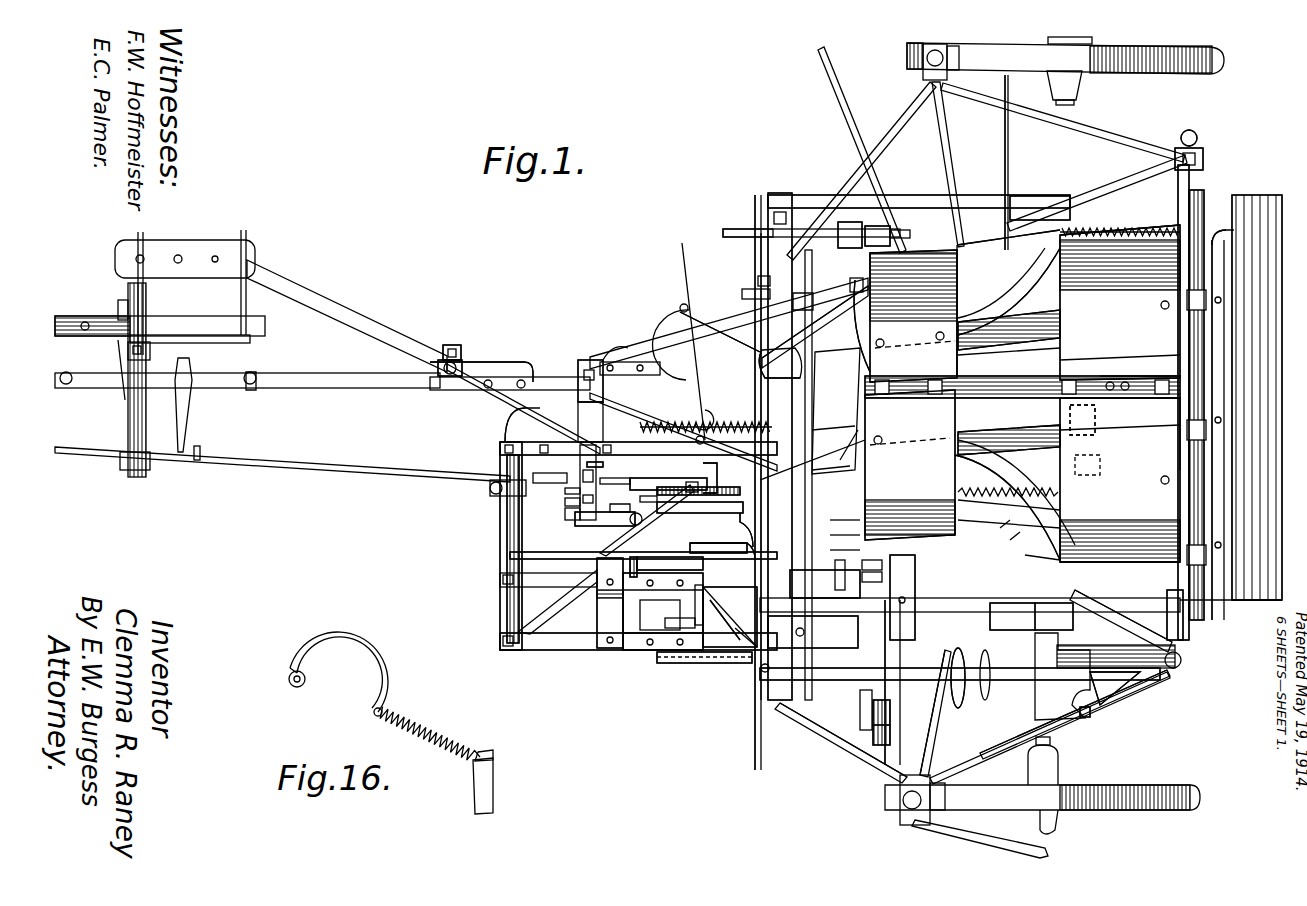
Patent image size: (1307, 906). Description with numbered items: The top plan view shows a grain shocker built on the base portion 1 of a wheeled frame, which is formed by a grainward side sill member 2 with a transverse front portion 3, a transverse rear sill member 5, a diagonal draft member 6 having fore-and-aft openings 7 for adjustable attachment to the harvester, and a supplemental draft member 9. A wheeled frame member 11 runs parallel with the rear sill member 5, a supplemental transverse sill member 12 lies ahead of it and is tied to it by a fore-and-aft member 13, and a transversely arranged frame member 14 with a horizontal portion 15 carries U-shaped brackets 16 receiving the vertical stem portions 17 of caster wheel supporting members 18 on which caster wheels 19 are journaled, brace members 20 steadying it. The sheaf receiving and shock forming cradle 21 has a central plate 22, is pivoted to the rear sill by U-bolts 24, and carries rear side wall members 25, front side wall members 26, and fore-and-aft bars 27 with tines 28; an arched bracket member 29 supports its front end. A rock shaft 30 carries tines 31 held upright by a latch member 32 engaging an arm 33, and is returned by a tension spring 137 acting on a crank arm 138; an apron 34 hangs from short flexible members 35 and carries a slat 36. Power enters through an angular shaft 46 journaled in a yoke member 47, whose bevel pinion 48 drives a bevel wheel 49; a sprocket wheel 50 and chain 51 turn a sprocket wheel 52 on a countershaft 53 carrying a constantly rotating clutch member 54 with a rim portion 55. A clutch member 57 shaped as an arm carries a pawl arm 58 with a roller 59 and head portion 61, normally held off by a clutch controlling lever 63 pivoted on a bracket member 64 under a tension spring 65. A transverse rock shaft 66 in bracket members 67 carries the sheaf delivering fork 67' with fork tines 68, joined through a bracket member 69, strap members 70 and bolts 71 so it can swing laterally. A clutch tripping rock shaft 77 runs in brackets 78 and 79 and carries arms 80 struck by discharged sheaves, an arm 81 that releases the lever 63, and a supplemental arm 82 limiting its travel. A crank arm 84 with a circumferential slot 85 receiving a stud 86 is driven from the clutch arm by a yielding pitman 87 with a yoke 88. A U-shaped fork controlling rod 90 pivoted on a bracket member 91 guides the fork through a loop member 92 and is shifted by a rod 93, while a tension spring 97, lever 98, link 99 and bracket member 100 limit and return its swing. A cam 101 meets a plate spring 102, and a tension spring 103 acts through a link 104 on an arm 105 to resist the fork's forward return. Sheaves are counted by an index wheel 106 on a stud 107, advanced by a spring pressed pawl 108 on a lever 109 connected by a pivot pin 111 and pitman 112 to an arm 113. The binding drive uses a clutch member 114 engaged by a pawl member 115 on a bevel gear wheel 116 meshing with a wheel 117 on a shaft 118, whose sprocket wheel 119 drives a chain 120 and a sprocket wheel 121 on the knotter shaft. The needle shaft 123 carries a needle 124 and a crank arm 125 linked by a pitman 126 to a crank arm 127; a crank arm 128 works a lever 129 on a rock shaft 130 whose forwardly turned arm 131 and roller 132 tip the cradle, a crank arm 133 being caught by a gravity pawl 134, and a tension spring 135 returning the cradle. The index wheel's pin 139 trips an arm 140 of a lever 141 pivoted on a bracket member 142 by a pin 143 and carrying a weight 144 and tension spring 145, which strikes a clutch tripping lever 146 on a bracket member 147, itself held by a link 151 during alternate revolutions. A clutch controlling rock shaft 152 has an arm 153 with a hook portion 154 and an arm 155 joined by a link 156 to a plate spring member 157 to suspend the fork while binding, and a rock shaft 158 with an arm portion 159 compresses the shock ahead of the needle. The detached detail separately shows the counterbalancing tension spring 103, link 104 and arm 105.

In FIG. 1, the base portion of the wheeled frame 1 is at (500, 542).
In FIG. 1, the side sill member 2 is at (1095, 185).
In FIG. 1, the front portion 3 is at (128, 424).
In FIG. 1, the transverse rear sill member 5 is at (1189, 624).
In FIG. 1, the draft member 6 is at (425, 330).
In FIG. 1, the openings 7 is at (180, 258).
In FIG. 1, the supplemental draft member 9 is at (845, 122).
In FIG. 1, the wheeled frame member 11 is at (1062, 238).
In FIG. 1, the supplemental transverse sill member 12 is at (760, 275).
In FIG. 16, the supplemental transverse sill member 12 is at (496, 798).
In FIG. 1, the fore and aft member 13 is at (1040, 200).
In FIG. 1, the transversely arranged frame member 14 is at (955, 172).
In FIG. 1, the horizontal portion 15 is at (985, 522).
In FIG. 1, the U-shaped brackets 16 is at (923, 68).
In FIG. 1, the vertical stem portions 17 is at (955, 68).
In FIG. 1, the caster wheel supporting members 18 is at (905, 48).
In FIG. 1, the caster wheels 19 is at (1118, 72).
In FIG. 1, the brace members 20 is at (855, 152).
In FIG. 1, the sheaf receiving and shock forming cradle 21 is at (980, 502).
In FIG. 1, the central plate 22 is at (1050, 438).
In FIG. 1, the U-bolts 24 is at (1228, 210).
In FIG. 1, the side wall members 25 is at (1000, 440).
In FIG. 1, the side wall members 26 is at (965, 280).
In FIG. 1, the bars 27 is at (1040, 320).
In FIG. 1, the tines 28 is at (988, 348).
In FIG. 1, the arched bracket member 29 is at (853, 322).
In FIG. 1, the rock shaft 30 is at (1245, 604).
In FIG. 1, the tines 31 is at (1165, 310).
In FIG. 1, the latch member 32 is at (1160, 376).
In FIG. 1, the arm 33 is at (1180, 440).
In FIG. 1, the apron 34 is at (1200, 170).
In FIG. 1, the short flexible members 35 is at (1167, 595).
In FIG. 1, the slat 36 is at (1260, 205).
In FIG. 1, the angular shaft 46 is at (735, 228).
In FIG. 1, the yoke member 47 is at (880, 228).
In FIG. 1, the bevel pinion 48 is at (855, 278).
In FIG. 1, the bevel wheel 49 is at (905, 232).
In FIG. 1, the sprocket wheel 50 is at (918, 682).
In FIG. 1, the chain 51 is at (836, 700).
In FIG. 1, the sprocket wheel 52 is at (670, 663).
In FIG. 1, the countershaft 53 is at (690, 628).
In FIG. 1, the constantly rotating clutch member 54 is at (668, 588).
In FIG. 1, the rim portion 55 is at (740, 595).
In FIG. 1, the clutch member 57 is at (690, 545).
In FIG. 1, the pawl arm 58 is at (696, 595).
In FIG. 1, the roller 59 is at (716, 620).
In FIG. 1, the head portion 61 is at (672, 600).
In FIG. 1, the clutch controlling lever 63 is at (568, 552).
In FIG. 1, the bracket member 64 is at (597, 616).
In FIG. 1, the tension spring 65 is at (635, 557).
In FIG. 1, the transverse rock shaft 66 is at (565, 491).
In FIG. 1, the bracket members 67 is at (627, 395).
In FIG. 1, the sheaf delivering fork 67' is at (247, 369).
In FIG. 1, the fork tines 68 is at (70, 386).
In FIG. 1, the bracket member 69 is at (535, 415).
In FIG. 1, the strap members 70 is at (495, 390).
In FIG. 1, the bolts 71 is at (578, 366).
In FIG. 1, the clutch tripping rock shaft 77 is at (393, 467).
In FIG. 1, the bracket 78 is at (120, 462).
In FIG. 1, the bracket 79 is at (507, 462).
In FIG. 1, the vertically arranged arms 80 is at (201, 454).
In FIG. 1, the arm 81 is at (500, 530).
In FIG. 1, the supplemental arm 82 is at (490, 490).
In FIG. 1, the crank arm 84 is at (565, 516).
In FIG. 1, the circumferential slot 85 is at (618, 512).
In FIG. 1, the stud 86 is at (565, 503).
In FIG. 1, the longitudinally yielding pitman 87 is at (606, 526).
In FIG. 1, the yoke 88 is at (712, 543).
In FIG. 1, the U-shaped fork controlling rod 90 is at (462, 362).
In FIG. 1, the bracket member 91 is at (453, 345).
In FIG. 1, the loop member 92 is at (512, 362).
In FIG. 1, the rod 93 is at (683, 265).
In FIG. 1, the tension spring 97 is at (612, 392).
In FIG. 1, the lever 98 is at (670, 318).
In FIG. 1, the link 99 is at (715, 328).
In FIG. 1, the bracket member 100 is at (828, 322).
In FIG. 1, the cam 101 is at (604, 463).
In FIG. 1, the plate spring 102 is at (570, 476).
In FIG. 1, the tension spring 103 is at (660, 424).
In FIG. 16, the tension spring 103 is at (440, 735).
In FIG. 1, the link 104 is at (697, 422).
In FIG. 16, the link 104 is at (365, 655).
In FIG. 1, the arm 105 is at (703, 442).
In FIG. 16, the arm 105 is at (290, 682).
In FIG. 1, the index wheel 106 is at (120, 345).
In FIG. 1, the stud 107 is at (838, 430).
In FIG. 1, the spring pressed pawl 108 is at (648, 502).
In FIG. 1, the lever 109 is at (703, 470).
In FIG. 1, the pivot pin 111 is at (655, 478).
In FIG. 1, the pitman 112 is at (614, 478).
In FIG. 1, the arm 113 is at (657, 491).
In FIG. 1, the constantly rotating clutch member 114 is at (866, 692).
In FIG. 1, the pawl member 115 is at (868, 568).
In FIG. 1, the bevel gear wheel 116 is at (864, 580).
In FIG. 1, the bevel gear wheel 117 is at (918, 455).
In FIG. 1, the shaft 118 is at (1020, 535).
In FIG. 1, the sprocket wheel 119 is at (1005, 525).
In FIG. 1, the chain 120 is at (1015, 630).
In FIG. 1, the sprocket wheel 121 is at (966, 700).
In FIG. 1, the needle shaft 123 is at (810, 195).
In FIG. 1, the needle 124 is at (1008, 145).
In FIG. 1, the crank arm 125 is at (768, 205).
In FIG. 1, the pitman 126 is at (755, 708).
In FIG. 1, the crank arm 127 is at (790, 712).
In FIG. 1, the crank arm 128 is at (1072, 716).
In FIG. 1, the lever 129 is at (1176, 668).
In FIG. 1, the rock shaft 130 is at (1105, 565).
In FIG. 1, the forwardly turned arm 131 is at (1055, 360).
In FIG. 1, the roller 132 is at (912, 345).
In FIG. 1, the crank arm 133 is at (1092, 715).
In FIG. 1, the gravity pawl 134 is at (1135, 685).
In FIG. 1, the tension spring 135 is at (960, 300).
In FIG. 1, the tension spring 137 is at (1112, 228).
In FIG. 1, the crank arm 138 is at (1240, 200).
In FIG. 1, the laterally projecting pin 139 is at (740, 506).
In FIG. 1, the arm 140 is at (748, 525).
In FIG. 1, the lever 141 is at (845, 470).
In FIG. 1, the bracket member 142 is at (855, 528).
In FIG. 1, the pin 143 is at (858, 542).
In FIG. 1, the weight 144 is at (752, 636).
In FIG. 1, the tension spring 145 is at (835, 468).
In FIG. 1, the clutch tripping lever 146 is at (812, 620).
In FIG. 1, the bracket member 147 is at (856, 556).
In FIG. 1, the link connection 151 is at (760, 670).
In FIG. 1, the clutch controlling rock shaft 152 is at (835, 410).
In FIG. 1, the laterally projecting arm 153 is at (812, 575).
In FIG. 1, the hook portion 154 is at (675, 562).
In FIG. 1, the laterally extending arm 155 is at (845, 248).
In FIG. 1, the link 156 is at (758, 278).
In FIG. 1, the plate spring member 157 is at (742, 294).
In FIG. 1, the rock shaft 158 is at (1035, 565).
In FIG. 1, the arm portion 159 is at (1050, 630).